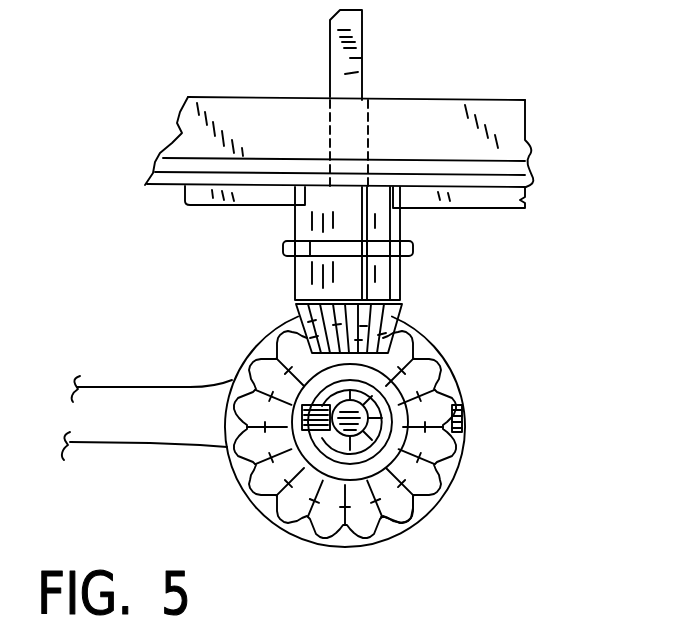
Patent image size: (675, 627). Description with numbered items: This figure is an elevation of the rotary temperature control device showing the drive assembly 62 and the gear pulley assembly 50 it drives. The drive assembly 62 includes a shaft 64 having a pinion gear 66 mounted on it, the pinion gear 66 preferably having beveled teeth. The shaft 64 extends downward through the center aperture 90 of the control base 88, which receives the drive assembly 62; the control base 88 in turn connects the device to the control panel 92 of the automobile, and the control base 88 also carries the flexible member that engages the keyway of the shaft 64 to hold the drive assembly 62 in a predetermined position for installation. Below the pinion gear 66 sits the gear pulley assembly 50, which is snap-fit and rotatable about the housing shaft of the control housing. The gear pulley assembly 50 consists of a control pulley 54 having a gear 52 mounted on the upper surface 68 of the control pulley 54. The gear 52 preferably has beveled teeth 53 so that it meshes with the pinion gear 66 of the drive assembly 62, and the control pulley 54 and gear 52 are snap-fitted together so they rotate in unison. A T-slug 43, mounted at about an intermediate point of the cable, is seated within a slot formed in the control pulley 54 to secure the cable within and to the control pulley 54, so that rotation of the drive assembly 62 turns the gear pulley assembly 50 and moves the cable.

The shaft 64 is at (352, 77).
The center aperture 90 is at (382, 200).
The control panel 92 is at (530, 140).
The control base 88 is at (530, 197).
The drive assembly 62 is at (447, 281).
The pinion gear 66 is at (420, 328).
The gear pulley assembly 50 is at (457, 373).
The T-slug 43 is at (463, 432).
The upper surface 68 is at (450, 480).
The control pulley 54 is at (428, 507).
The gear 52 is at (363, 500).
The beveled teeth 53 is at (403, 527).